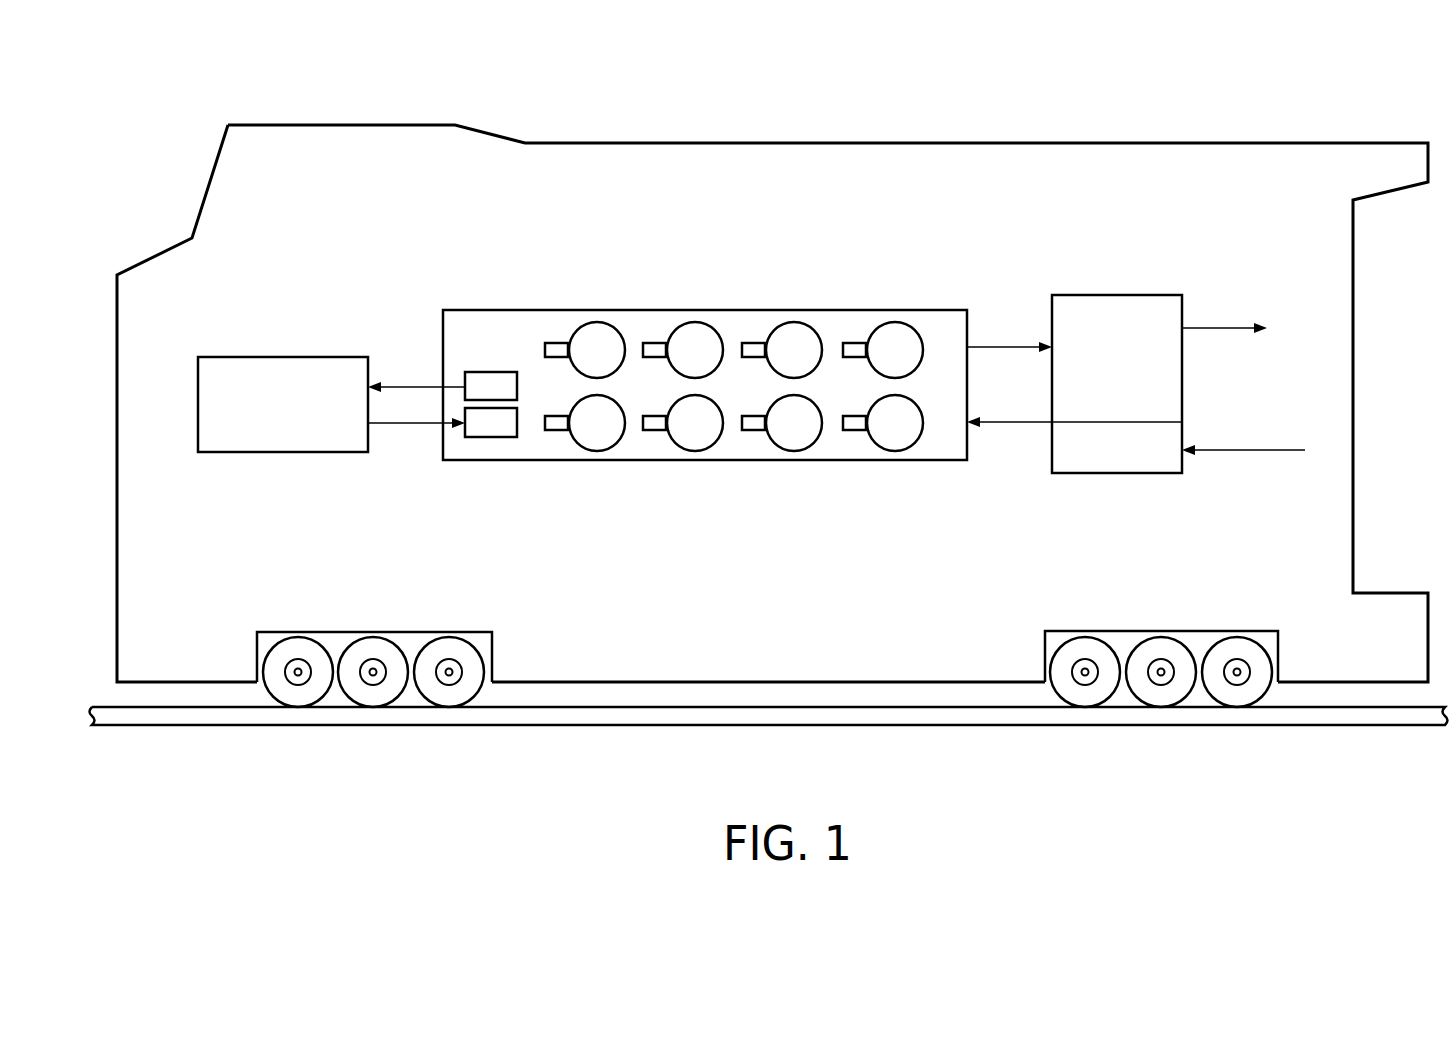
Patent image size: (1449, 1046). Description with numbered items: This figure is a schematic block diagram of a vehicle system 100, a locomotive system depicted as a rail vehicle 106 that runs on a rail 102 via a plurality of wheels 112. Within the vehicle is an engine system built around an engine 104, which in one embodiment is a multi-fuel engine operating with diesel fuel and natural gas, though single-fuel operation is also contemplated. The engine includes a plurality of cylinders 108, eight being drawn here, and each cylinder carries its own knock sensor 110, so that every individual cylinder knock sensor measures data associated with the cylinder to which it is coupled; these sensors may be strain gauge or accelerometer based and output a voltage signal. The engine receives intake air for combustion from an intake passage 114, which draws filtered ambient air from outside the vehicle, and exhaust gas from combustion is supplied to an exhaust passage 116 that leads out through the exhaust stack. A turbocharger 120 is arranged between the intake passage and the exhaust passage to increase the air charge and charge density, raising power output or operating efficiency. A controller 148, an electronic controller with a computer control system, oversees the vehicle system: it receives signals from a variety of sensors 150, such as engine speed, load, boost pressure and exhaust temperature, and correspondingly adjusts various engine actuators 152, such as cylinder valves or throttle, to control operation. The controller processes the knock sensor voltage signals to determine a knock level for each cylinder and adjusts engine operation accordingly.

The vehicle system 100 is at (1252, 78).
The rail 102 is at (1353, 725).
The engine 104 is at (453, 310).
The vehicle 106 is at (1083, 143).
The cylinders 108 is at (913, 434).
The knock sensor 110 is at (699, 378).
The wheels 112 is at (473, 661).
The intake passage 114 is at (1220, 450).
The exhaust passage 116 is at (1200, 328).
The turbocharger 120 is at (1099, 409).
The controller 148 is at (265, 431).
The sensors 150 is at (442, 386).
The engine actuators 152 is at (442, 422).